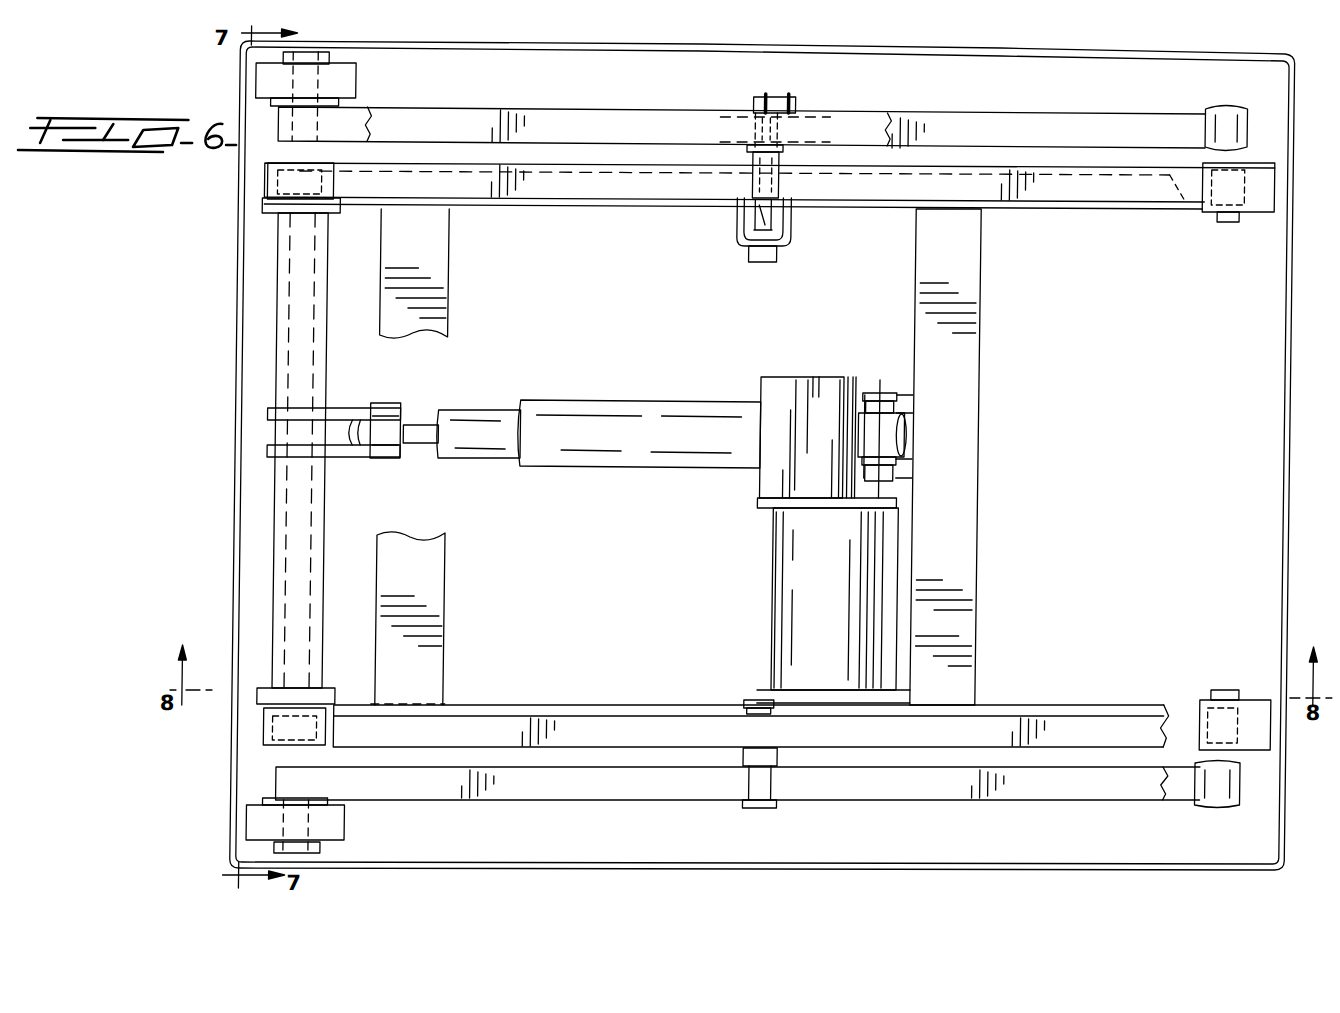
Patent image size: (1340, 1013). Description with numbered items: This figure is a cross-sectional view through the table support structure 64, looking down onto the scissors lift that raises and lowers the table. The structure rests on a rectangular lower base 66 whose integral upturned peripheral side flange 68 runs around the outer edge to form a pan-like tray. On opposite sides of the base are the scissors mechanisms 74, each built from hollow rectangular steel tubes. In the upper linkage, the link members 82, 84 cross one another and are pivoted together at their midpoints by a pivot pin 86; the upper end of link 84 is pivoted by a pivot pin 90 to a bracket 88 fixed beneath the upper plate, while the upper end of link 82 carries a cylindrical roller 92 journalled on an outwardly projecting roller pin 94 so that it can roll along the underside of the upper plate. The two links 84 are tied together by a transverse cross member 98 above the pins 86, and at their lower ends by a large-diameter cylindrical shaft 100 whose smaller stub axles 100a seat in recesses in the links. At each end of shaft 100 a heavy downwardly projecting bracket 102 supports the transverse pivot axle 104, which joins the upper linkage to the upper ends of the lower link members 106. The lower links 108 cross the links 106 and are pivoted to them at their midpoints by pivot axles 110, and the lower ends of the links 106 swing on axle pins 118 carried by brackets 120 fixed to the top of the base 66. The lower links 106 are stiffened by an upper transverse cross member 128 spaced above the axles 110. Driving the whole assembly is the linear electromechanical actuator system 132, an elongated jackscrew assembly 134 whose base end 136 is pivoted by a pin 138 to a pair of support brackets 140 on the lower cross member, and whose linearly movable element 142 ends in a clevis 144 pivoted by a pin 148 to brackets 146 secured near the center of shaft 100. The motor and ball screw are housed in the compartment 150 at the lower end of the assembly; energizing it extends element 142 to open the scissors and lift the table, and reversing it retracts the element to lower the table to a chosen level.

The table support structure 64 is at (1295, 476).
The lower base 66 is at (1088, 457).
The upturned peripheral side flange 68 is at (1010, 44).
The scissors mechanism 74 is at (745, 105).
The link member 82 is at (888, 130).
The link member 84 is at (1185, 203).
The pivot pin 86 is at (775, 198).
The bracket 88 is at (1268, 188).
The pivot pin 90 is at (1228, 222).
The cylindrical roller 92 is at (248, 82).
The roller pin 94 is at (305, 50).
The transverse cross member 98 is at (917, 250).
The cylindrical shaft 100 is at (279, 256).
The stub axle 100a is at (280, 165).
The bracket 102 is at (268, 204).
The transverse pivot axle 104 is at (283, 533).
The lower link member 106 is at (941, 787).
The lower link 108 is at (647, 722).
The pivot axle 110 is at (764, 808).
The axle pin 118 is at (1222, 700).
The bracket 120 is at (1270, 727).
The upper transverse cross member 128 is at (450, 230).
The linear electromechanical actuator system 132 is at (754, 485).
The jackscrew assembly 134 is at (631, 400).
The base end 136 is at (883, 395).
The pin 138 is at (870, 400).
The support bracket 140 is at (904, 405).
The linearly movable element 142 is at (473, 400).
The clevis 144 is at (421, 422).
The bracket 146 is at (356, 457).
The pin 148 is at (389, 460).
The compartment 150 is at (835, 605).